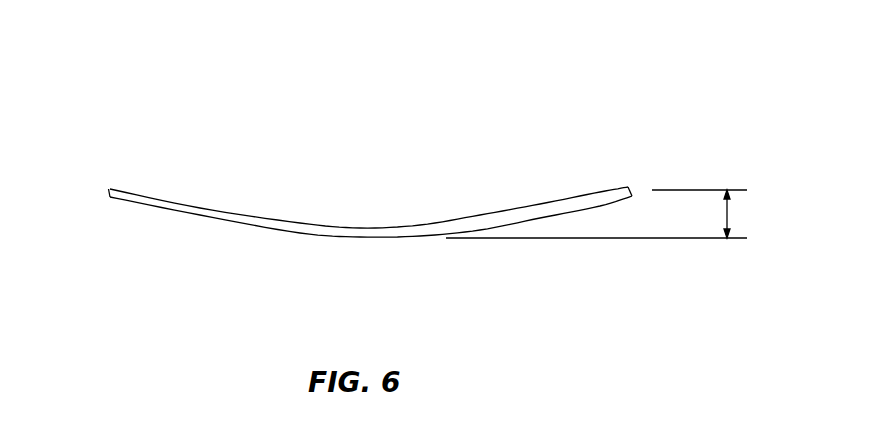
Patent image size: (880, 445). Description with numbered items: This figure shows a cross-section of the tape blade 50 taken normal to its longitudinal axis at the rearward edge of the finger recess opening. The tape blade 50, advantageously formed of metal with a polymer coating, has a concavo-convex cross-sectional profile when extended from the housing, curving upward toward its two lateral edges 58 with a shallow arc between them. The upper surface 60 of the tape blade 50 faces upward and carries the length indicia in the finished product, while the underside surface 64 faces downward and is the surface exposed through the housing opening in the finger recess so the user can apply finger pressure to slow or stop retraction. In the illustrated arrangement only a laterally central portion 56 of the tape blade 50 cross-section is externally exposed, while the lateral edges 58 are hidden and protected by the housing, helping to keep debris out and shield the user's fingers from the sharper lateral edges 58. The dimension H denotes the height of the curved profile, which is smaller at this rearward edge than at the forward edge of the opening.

The tape blade 50 is at (553, 72).
The laterally central portion 56 is at (373, 238).
The lateral edges 58 is at (107, 190).
The upper surface 60 is at (464, 218).
The underside surface 64 is at (540, 222).